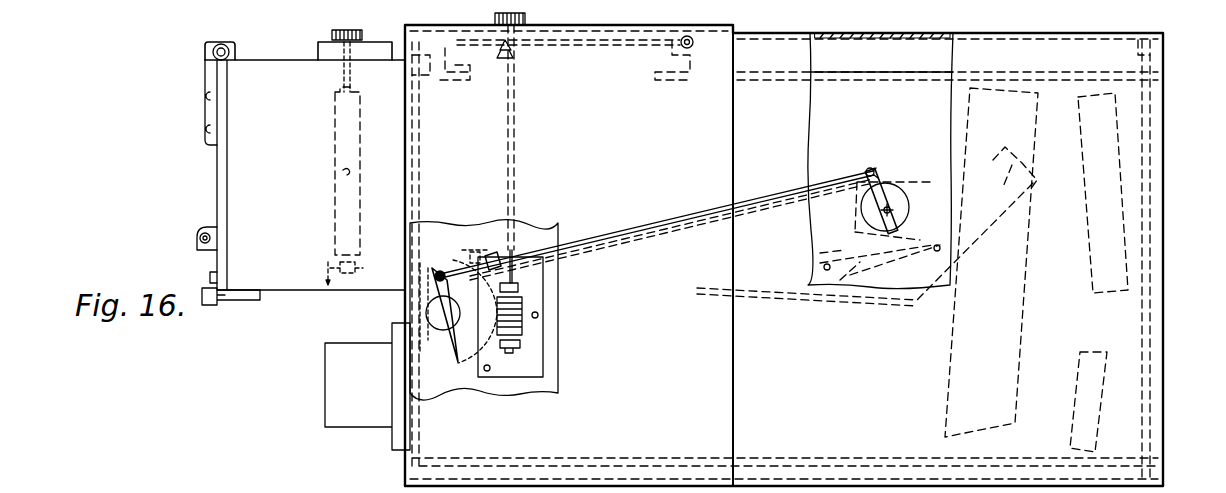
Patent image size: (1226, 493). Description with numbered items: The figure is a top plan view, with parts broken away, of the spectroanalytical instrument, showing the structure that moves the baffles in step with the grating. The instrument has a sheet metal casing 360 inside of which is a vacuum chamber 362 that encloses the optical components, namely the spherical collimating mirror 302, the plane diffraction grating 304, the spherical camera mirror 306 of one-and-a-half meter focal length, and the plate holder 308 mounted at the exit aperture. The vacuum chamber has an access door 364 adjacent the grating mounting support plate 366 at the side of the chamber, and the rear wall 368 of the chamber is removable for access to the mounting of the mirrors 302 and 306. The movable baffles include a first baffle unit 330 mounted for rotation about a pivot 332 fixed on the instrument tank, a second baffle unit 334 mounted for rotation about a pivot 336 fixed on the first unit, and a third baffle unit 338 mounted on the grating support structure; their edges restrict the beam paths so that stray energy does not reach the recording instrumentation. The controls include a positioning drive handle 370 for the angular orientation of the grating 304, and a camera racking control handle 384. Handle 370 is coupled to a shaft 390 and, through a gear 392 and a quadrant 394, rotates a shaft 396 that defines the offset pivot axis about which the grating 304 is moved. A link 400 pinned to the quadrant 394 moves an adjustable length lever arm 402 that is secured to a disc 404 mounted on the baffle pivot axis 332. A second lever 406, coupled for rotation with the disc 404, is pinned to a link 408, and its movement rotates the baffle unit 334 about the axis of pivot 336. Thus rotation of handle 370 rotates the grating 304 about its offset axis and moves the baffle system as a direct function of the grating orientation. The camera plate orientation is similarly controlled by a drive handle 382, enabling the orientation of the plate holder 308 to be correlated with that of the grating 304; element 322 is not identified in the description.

The spherical collimating mirror 302 is at (1090, 385).
The plane diffraction grating 304 is at (500, 254).
The spherical camera mirror 306 is at (1088, 215).
The plate holder 308 is at (335, 235).
The pin 322 is at (345, 168).
The first baffle unit 330 is at (1017, 335).
The pivot 332 is at (893, 207).
The second baffle unit 334 is at (780, 300).
The pivot 336 is at (1008, 150).
The third baffle unit 338 is at (470, 250).
The sheet metal casing 360 is at (1163, 56).
The vacuum chamber 362 is at (790, 78).
The access door 364 is at (637, 48).
The grating mounting support plate 366 is at (545, 357).
The rear wall 368 is at (1150, 175).
The positioning drive handle 370 is at (492, 19).
The drive handle 382 is at (325, 287).
The handle 384 is at (332, 35).
The shaft 390 is at (514, 160).
The gear 392 is at (520, 298).
The quadrant 394 is at (468, 358).
The shaft 396 is at (440, 330).
The link 400 is at (556, 242).
The adjustable length lever arm 402 is at (870, 168).
The disc 404 is at (890, 188).
The second lever 406 is at (818, 252).
The link 408 is at (856, 300).